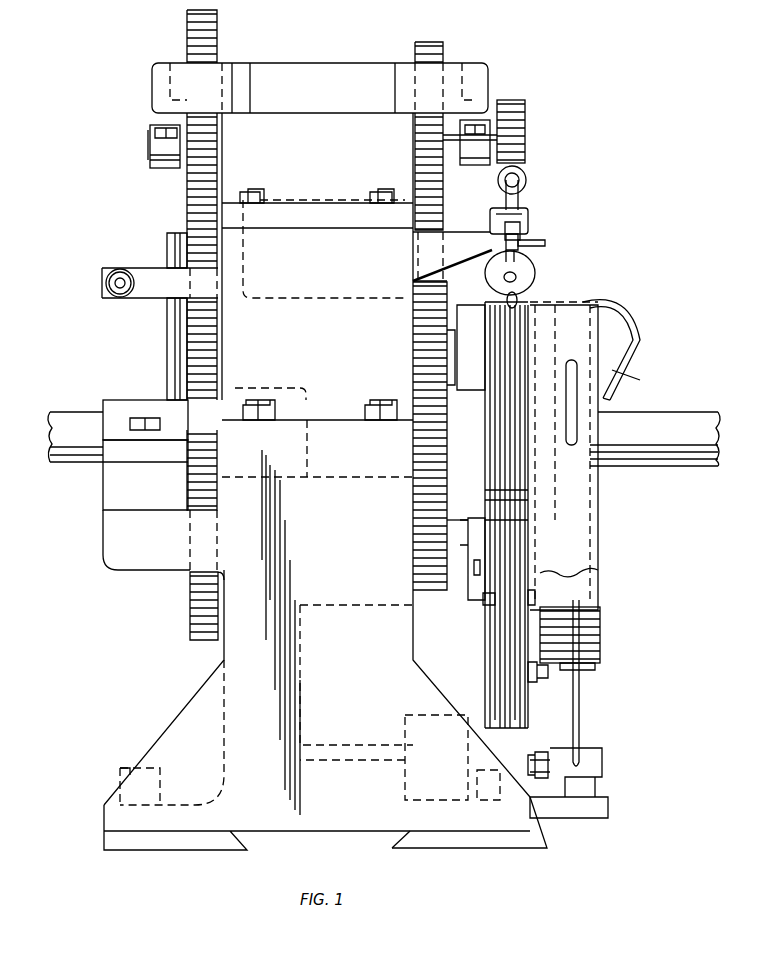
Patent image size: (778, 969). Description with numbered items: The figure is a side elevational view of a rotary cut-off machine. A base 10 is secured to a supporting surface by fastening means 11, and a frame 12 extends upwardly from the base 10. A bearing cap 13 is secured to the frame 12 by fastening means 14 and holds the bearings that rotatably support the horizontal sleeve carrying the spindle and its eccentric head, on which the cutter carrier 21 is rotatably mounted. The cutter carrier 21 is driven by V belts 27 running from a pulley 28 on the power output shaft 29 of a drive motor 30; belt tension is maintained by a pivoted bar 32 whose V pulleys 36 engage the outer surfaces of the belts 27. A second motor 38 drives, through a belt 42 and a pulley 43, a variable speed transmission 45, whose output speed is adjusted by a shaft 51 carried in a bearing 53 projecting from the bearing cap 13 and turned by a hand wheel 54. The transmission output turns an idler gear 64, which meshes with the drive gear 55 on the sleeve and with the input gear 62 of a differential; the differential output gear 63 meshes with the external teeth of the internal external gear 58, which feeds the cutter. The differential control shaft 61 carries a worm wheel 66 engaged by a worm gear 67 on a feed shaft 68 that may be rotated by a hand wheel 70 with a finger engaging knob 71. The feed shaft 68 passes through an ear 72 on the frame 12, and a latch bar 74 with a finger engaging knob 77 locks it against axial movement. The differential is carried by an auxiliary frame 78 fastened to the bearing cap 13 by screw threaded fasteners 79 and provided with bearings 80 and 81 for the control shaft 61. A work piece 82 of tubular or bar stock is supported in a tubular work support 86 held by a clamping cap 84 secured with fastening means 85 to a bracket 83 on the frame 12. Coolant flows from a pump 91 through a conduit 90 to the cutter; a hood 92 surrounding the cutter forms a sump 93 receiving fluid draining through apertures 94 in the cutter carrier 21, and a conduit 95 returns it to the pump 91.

The base 10 is at (104, 831).
The fastening means 11 is at (124, 775).
The frame 12 is at (228, 653).
The bearing cap 13 is at (333, 361).
The fastening means 14 is at (388, 402).
The cutter carrier 21 is at (528, 305).
The V belts 27 is at (528, 537).
The pulley 28 is at (528, 711).
The power output shaft 29 is at (540, 672).
The drive motor 30 is at (465, 643).
The bar 32 is at (475, 548).
The V pulleys 36 is at (528, 593).
The second motor 38 is at (303, 407).
The belt 42 is at (174, 343).
The pulley 43 is at (167, 248).
The variable speed transmission 45 is at (308, 278).
The shaft 51 is at (120, 281).
The bearing 53 is at (150, 290).
The hand wheel 54 is at (116, 294).
The drive gear 55 is at (425, 512).
The internal external gear 58 is at (191, 611).
The control shaft 61 is at (492, 130).
The input gear 62 is at (428, 44).
The output gear 63 is at (188, 30).
The idler gear 64 is at (440, 283).
The worm wheel 66 is at (524, 126).
The worm gear 67 is at (524, 178).
The feed shaft 68 is at (518, 200).
The hand wheel 70 is at (528, 270).
The finger engaging knob 71 is at (505, 299).
The ear 72 is at (528, 212).
The latch bar 74 is at (529, 225).
The finger engaging knob 77 is at (545, 243).
The auxiliary frame 78 is at (327, 62).
The screw threaded fasteners 79 is at (262, 200).
The bearing 80 is at (168, 163).
The bearing 81 is at (473, 160).
The work piece 82 is at (60, 410).
The bracket 83 is at (130, 560).
The clamping cap 84 is at (118, 404).
The fastening means 85 is at (148, 418).
The tubular work support 86 is at (100, 465).
The conduit 90 is at (630, 345).
The pump 91 is at (602, 763).
The hood 92 is at (600, 630).
The sump 93 is at (547, 570).
The apertures 94 is at (578, 405).
The conduit 95 is at (580, 711).